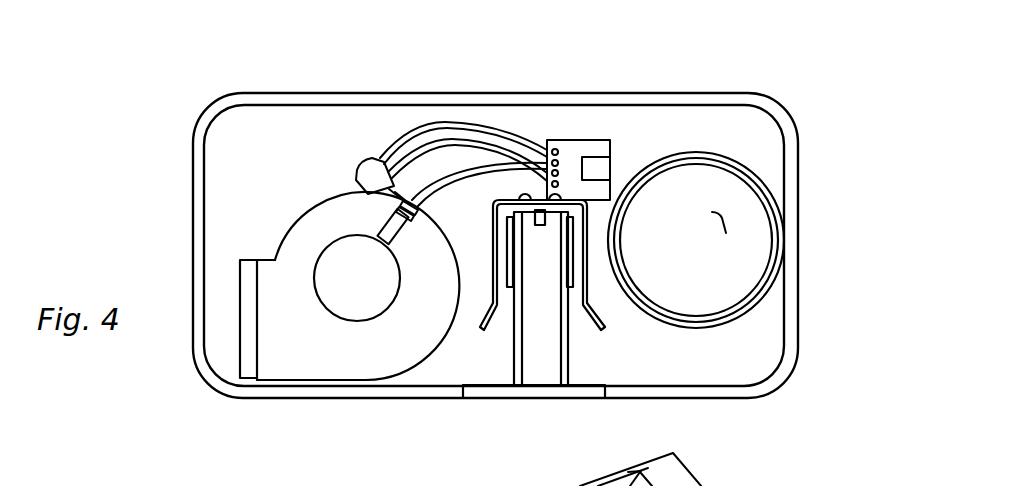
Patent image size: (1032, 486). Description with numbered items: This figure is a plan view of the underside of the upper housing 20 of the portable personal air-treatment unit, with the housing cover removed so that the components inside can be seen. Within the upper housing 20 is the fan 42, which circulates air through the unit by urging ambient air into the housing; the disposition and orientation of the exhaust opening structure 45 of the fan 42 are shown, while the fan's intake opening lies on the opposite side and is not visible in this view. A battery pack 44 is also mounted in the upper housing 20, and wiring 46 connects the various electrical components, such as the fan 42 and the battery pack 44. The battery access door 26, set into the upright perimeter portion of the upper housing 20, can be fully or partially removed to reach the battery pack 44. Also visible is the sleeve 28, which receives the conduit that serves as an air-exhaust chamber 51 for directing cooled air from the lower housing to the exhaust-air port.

The upper housing 20 is at (785, 113).
The sleeve 28 is at (773, 237).
The air-exhaust chamber 51 is at (722, 218).
The fan 42 is at (323, 215).
The exhaust opening structure 45 is at (233, 323).
The wiring 46 is at (425, 135).
The battery access door 26 is at (522, 390).
The battery pack 44 is at (550, 352).